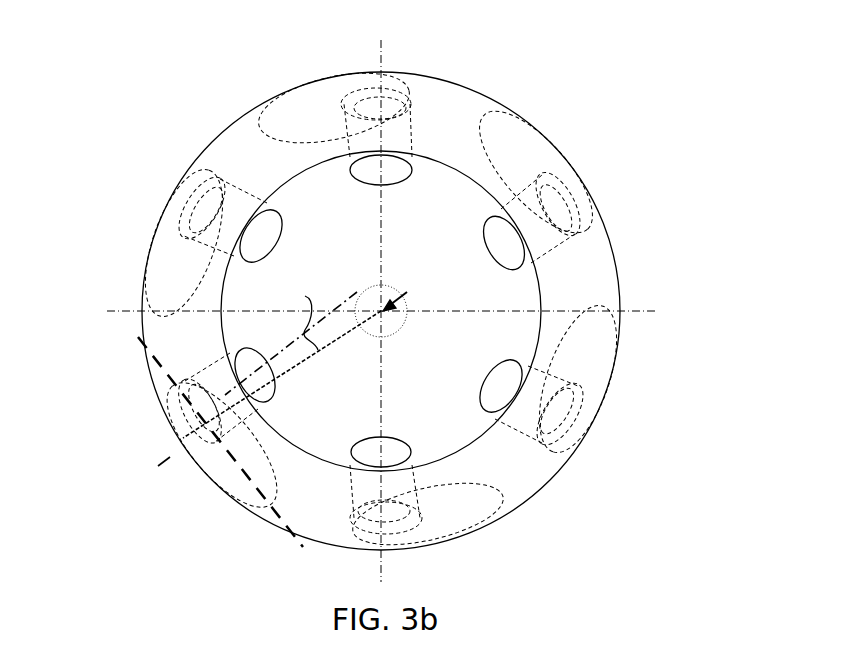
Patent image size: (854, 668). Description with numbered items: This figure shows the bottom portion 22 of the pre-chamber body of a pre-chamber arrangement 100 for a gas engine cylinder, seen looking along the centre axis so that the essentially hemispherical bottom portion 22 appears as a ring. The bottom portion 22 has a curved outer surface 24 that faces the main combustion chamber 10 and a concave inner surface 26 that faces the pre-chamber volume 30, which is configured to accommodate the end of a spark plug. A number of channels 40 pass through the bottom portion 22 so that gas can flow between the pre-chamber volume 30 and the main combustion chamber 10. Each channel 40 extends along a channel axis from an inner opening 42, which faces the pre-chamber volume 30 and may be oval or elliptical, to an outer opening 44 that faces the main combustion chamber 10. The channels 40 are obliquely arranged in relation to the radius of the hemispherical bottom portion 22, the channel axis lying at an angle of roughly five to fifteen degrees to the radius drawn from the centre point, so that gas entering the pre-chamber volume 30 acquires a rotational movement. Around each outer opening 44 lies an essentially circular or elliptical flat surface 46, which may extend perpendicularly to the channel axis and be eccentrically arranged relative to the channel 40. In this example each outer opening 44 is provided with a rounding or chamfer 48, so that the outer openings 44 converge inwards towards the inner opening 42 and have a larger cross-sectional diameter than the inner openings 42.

The pre-chamber arrangement 100 is at (207, 104).
The main combustion chamber 10 is at (608, 110).
The bottom portion 22 is at (614, 254).
The curved outer surface 24 is at (196, 158).
The concave inner surface 26 is at (291, 178).
The pre-chamber volume 30 is at (444, 244).
The channel 40 is at (525, 413).
The inner opening 42 is at (498, 387).
The outer opening 44 is at (580, 412).
The flat surface 46 is at (316, 92).
The rounding or chamfer 48 is at (571, 374).